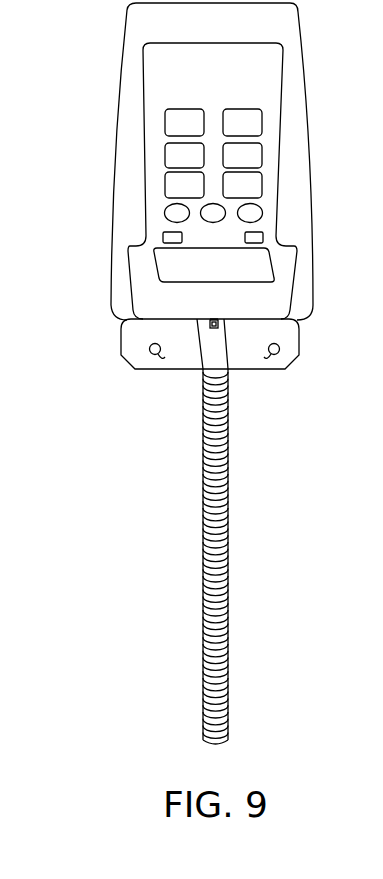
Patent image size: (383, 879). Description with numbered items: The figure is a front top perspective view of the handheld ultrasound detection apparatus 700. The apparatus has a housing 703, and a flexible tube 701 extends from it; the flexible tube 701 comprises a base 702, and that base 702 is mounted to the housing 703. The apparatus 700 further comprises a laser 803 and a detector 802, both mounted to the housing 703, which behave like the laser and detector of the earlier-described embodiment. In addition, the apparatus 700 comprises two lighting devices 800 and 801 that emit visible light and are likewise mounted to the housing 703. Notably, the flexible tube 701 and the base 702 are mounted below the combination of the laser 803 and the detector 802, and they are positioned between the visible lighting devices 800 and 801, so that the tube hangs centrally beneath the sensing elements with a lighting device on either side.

The handheld ultrasound detection apparatus 700 is at (70, 238).
The flexible tube 701 is at (228, 497).
The base 702 is at (224, 348).
The housing 703 is at (311, 192).
The lighting device 800 is at (210, 344).
The lighting device 801 is at (261, 356).
The detector 802 is at (217, 320).
The laser 803 is at (210, 320).